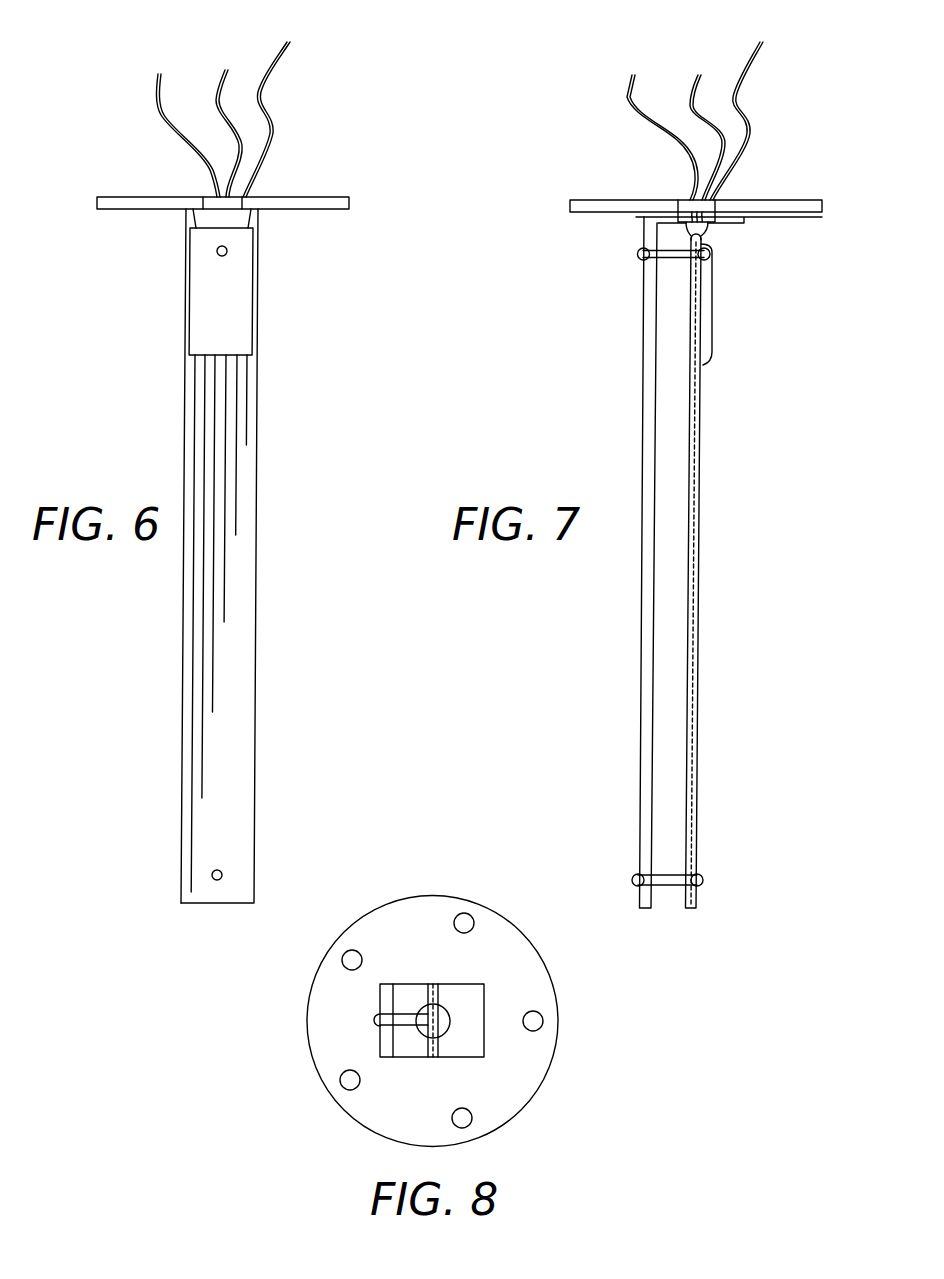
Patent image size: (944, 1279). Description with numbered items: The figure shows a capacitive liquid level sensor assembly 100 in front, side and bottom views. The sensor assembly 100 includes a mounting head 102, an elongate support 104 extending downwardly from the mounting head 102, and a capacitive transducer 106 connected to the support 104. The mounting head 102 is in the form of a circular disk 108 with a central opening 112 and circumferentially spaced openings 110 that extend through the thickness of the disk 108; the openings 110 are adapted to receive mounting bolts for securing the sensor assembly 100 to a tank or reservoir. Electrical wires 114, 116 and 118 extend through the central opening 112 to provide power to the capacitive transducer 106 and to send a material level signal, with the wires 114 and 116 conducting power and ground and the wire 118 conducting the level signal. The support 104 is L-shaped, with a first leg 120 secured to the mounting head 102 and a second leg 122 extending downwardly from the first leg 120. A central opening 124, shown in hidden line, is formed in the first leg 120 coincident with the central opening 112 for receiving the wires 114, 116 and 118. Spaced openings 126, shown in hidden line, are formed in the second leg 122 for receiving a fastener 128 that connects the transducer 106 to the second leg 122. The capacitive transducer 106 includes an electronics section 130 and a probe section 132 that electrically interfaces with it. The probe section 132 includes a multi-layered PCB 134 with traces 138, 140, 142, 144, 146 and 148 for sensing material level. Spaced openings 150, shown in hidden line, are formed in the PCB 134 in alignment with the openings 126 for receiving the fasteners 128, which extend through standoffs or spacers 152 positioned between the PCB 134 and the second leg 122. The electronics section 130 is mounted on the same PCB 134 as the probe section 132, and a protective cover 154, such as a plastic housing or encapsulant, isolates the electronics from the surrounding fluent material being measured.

In FIG. 6, the capacitive liquid level sensor assembly 100 is at (344, 171).
In FIG. 7, the capacitive liquid level sensor assembly 100 is at (817, 172).
In FIG. 8, the capacitive liquid level sensor assembly 100 is at (631, 1050).
In FIG. 6, the mounting head 102 is at (292, 206).
In FIG. 7, the mounting head 102 is at (755, 205).
In FIG. 7, the elongate support 104 is at (644, 367).
In FIG. 6, the capacitive transducer 106 is at (259, 462).
In FIG. 7, the capacitive transducer 106 is at (703, 460).
In FIG. 6, the circular disk 108 is at (118, 195).
In FIG. 7, the circular disk 108 is at (592, 198).
In FIG. 8, the circular disk 108 is at (371, 1134).
In FIG. 8, the circumferentially spaced openings 110 is at (456, 918).
In FIG. 6, the central opening 112 is at (208, 197).
In FIG. 7, the central opening 112 is at (682, 200).
In FIG. 8, the central opening 112 is at (442, 1012).
In FIG. 6, the electrical wire 114 is at (157, 80).
In FIG. 7, the electrical wire 114 is at (630, 80).
In FIG. 6, the electrical wire 116 is at (225, 68).
In FIG. 7, the electrical wire 116 is at (698, 74).
In FIG. 6, the electrical wire 118 is at (287, 48).
In FIG. 7, the electrical wire 118 is at (760, 44).
In FIG. 7, the first leg 120 is at (746, 220).
In FIG. 8, the first leg 120 is at (468, 1003).
In FIG. 7, the second leg 122 is at (644, 421).
In FIG. 8, the second leg 122 is at (390, 1005).
In FIG. 7, the central opening 124 is at (708, 226).
In FIG. 7, the spaced openings 126 is at (648, 248).
In FIG. 6, the fastener 128 is at (217, 252).
In FIG. 7, the fastener 128 is at (638, 253).
In FIG. 6, the electronics section 130 is at (240, 282).
In FIG. 7, the electronics section 130 is at (706, 333).
In FIG. 6, the probe section 132 is at (257, 550).
In FIG. 7, the probe section 132 is at (701, 513).
In FIG. 8, the probe section 132 is at (440, 1047).
In FIG. 6, the multi-layered PCB 134 is at (238, 662).
In FIG. 7, the multi-layered PCB 134 is at (699, 606).
In FIG. 6, the trace 138 is at (192, 850).
In FIG. 6, the trace 140 is at (203, 773).
In FIG. 6, the trace 142 is at (213, 702).
In FIG. 6, the trace 144 is at (226, 590).
In FIG. 6, the trace 146 is at (237, 500).
In FIG. 6, the trace 148 is at (248, 395).
In FIG. 7, the spaced openings 150 is at (708, 266).
In FIG. 7, the standoffs or spacers 152 is at (676, 262).
In FIG. 8, the standoffs or spacers 152 is at (405, 1017).
In FIG. 6, the protective cover 154 is at (188, 310).
In FIG. 7, the protective cover 154 is at (712, 357).